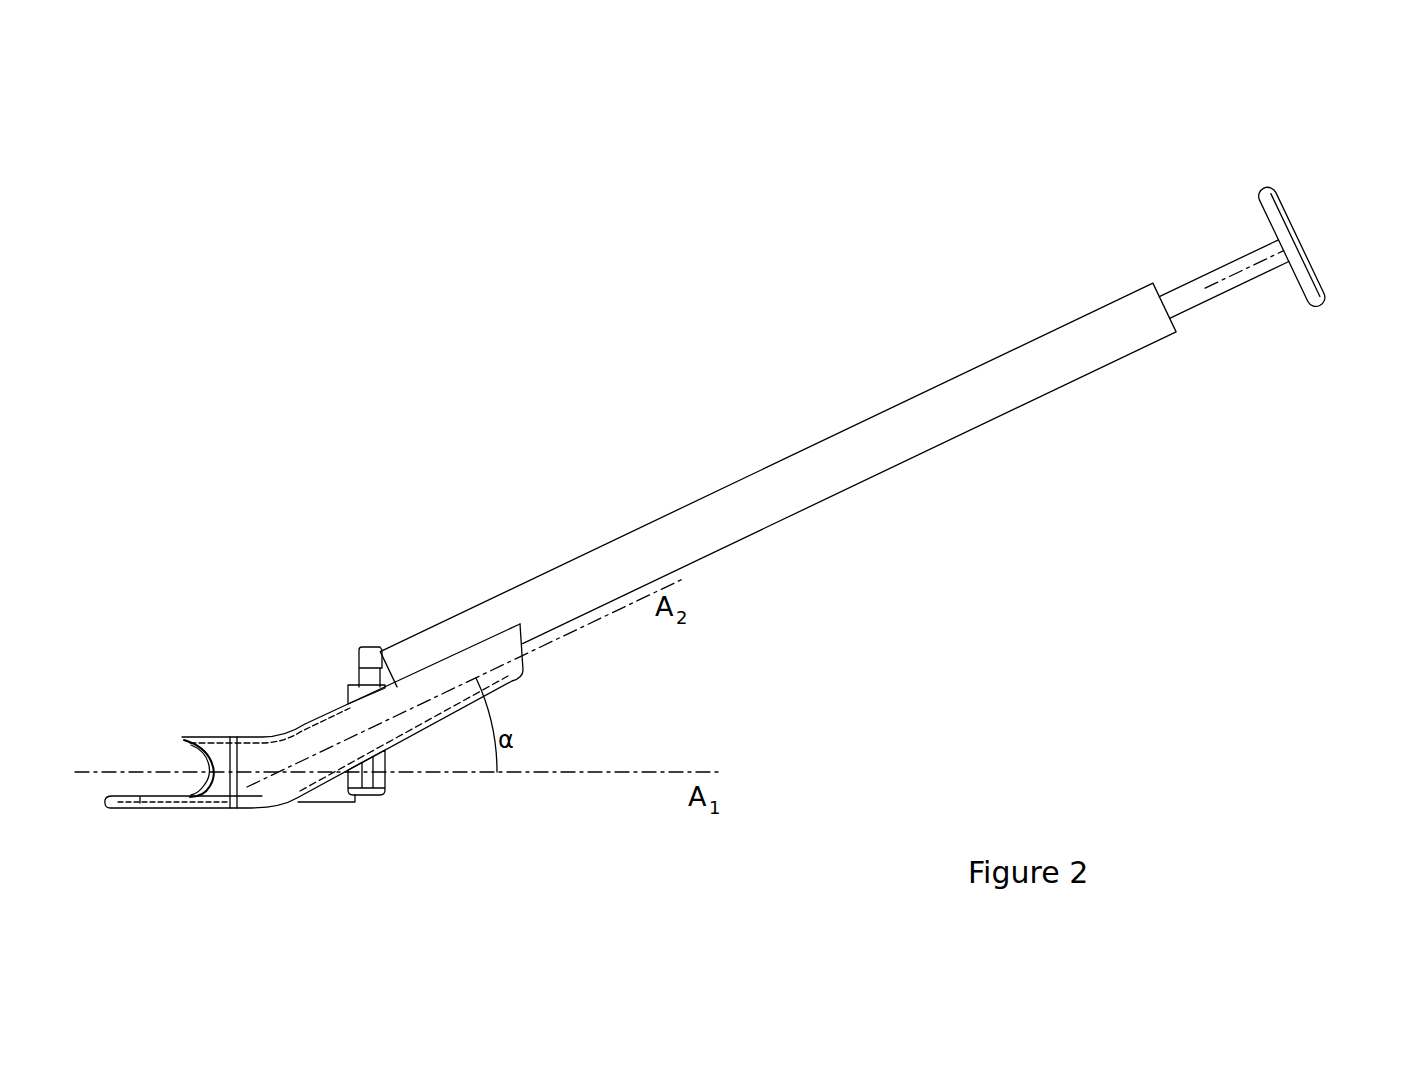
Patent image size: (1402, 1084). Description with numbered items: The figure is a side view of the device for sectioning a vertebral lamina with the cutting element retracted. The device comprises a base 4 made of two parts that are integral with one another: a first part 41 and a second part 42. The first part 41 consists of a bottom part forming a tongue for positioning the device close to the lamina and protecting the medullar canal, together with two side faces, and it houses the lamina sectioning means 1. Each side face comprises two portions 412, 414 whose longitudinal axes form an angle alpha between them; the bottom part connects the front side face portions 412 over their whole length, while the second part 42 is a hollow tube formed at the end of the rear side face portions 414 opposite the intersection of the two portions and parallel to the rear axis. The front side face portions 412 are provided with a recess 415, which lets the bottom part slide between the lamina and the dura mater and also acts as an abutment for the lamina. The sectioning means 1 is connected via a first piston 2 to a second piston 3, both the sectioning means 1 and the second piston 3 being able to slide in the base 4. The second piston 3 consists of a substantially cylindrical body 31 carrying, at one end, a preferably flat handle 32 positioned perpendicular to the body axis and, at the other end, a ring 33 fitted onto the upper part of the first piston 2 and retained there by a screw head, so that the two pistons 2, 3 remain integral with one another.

The lamina sectioning means 1 is at (337, 796).
The first piston 2 is at (372, 653).
The second piston 3 is at (1256, 250).
The body 31 is at (1213, 270).
The handle 32 is at (1293, 253).
The ring 33 is at (366, 678).
The base 4 is at (338, 722).
The first part 41 is at (302, 722).
The side face portions 412 is at (217, 793).
The side face portions 414 is at (440, 677).
The recess 415 is at (210, 765).
The second part 42 is at (840, 457).